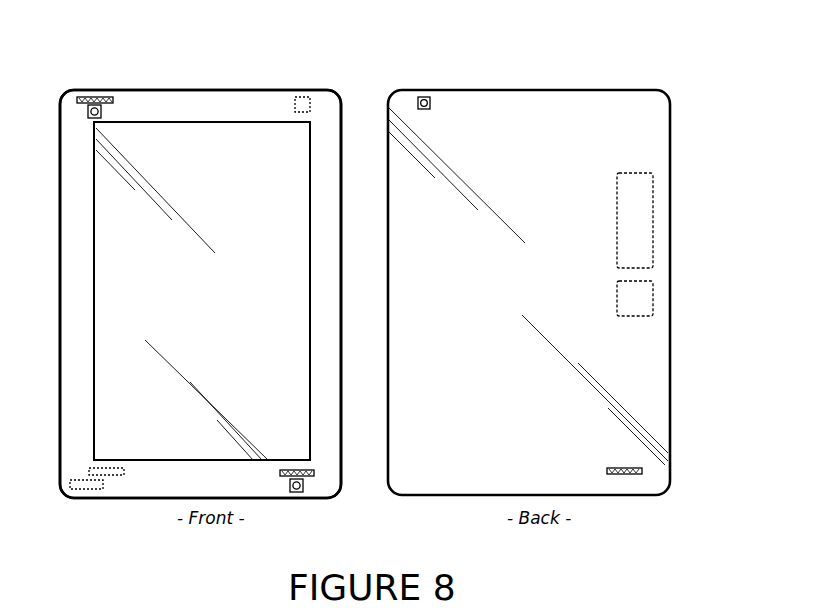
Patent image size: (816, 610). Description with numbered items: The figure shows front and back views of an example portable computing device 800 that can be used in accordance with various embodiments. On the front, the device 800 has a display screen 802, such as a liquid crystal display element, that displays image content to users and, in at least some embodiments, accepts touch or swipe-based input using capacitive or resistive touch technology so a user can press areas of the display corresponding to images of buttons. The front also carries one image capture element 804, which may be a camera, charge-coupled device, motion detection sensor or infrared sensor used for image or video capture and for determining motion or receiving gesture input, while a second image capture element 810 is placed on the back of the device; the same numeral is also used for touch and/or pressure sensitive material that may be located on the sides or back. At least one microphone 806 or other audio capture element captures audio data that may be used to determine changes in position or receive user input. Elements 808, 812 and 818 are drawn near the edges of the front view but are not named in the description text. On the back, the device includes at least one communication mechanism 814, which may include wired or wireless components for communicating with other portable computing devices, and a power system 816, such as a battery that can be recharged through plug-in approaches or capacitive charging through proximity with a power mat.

The portable computing device 800 is at (689, 92).
The display screen 802 is at (93, 220).
The image capture element 804 is at (88, 112).
The microphone 806 is at (102, 97).
The speaker 808 is at (308, 477).
The image capture element 810 is at (300, 98).
The speaker / port 812 is at (108, 476).
The communication mechanism 814 is at (652, 237).
The power system 816 is at (652, 300).
The port 818 is at (87, 490).